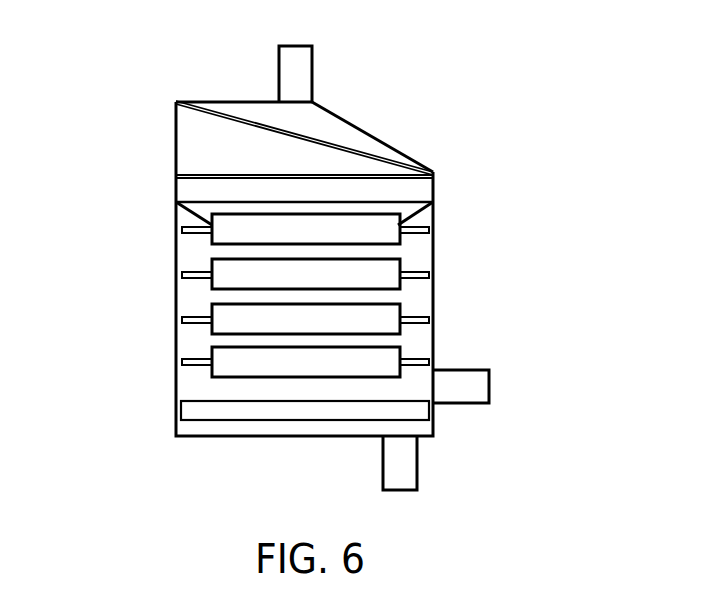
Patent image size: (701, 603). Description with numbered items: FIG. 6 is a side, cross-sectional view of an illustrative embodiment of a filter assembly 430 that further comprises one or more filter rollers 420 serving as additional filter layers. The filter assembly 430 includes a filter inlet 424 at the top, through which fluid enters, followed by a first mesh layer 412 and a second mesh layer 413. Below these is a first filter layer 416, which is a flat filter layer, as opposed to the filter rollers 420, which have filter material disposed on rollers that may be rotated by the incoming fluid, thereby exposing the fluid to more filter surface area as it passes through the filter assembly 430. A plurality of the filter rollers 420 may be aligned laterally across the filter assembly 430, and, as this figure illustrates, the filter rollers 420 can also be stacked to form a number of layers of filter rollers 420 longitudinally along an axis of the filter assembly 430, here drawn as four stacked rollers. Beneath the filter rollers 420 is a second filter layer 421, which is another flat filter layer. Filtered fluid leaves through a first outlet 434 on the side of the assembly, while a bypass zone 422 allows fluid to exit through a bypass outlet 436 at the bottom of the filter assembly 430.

The first mesh layer 412 is at (175, 103).
The second mesh layer 413 is at (175, 177).
The first filter layer 416 is at (175, 195).
The filter rollers 420 is at (212, 244).
The second filter layer 421 is at (180, 412).
The bypass zone 422 is at (173, 426).
The filter inlet 424 is at (312, 60).
The filter assembly 430 is at (410, 68).
The first outlet 434 is at (460, 368).
The bypass outlet 436 is at (417, 465).